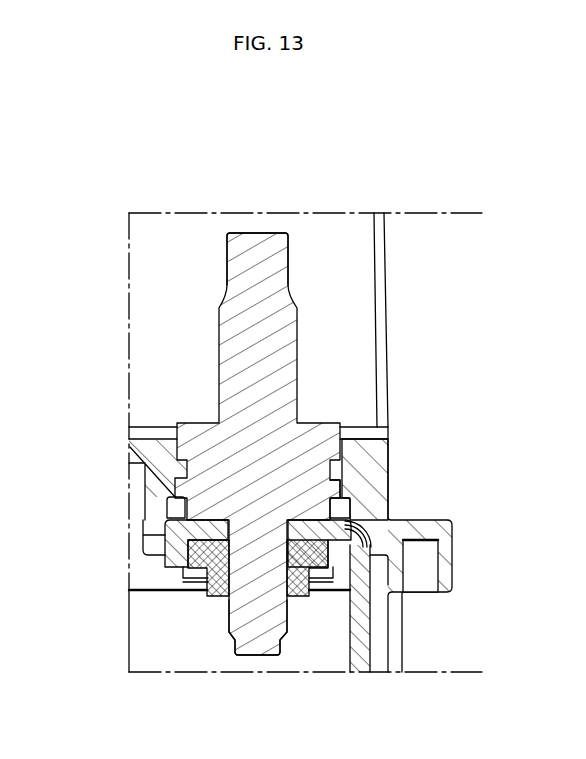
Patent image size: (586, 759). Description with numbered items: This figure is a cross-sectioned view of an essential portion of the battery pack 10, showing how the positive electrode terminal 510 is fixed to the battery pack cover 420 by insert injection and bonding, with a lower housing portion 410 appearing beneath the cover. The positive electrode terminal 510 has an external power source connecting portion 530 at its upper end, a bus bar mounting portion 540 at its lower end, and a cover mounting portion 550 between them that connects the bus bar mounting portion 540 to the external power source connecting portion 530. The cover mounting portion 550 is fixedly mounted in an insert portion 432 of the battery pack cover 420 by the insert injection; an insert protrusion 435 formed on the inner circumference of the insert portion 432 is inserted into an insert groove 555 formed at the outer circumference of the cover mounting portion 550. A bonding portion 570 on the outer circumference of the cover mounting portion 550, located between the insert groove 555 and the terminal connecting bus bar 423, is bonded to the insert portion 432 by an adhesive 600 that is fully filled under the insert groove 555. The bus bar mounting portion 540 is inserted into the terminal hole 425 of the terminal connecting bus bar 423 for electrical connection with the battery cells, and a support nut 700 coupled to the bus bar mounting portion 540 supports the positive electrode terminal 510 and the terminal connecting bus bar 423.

The battery pack 10 is at (97, 153).
The lower housing 410 is at (128, 648).
The battery pack cover 420 is at (128, 321).
The terminal connecting bus bar 423 is at (358, 660).
The terminal hole 425 is at (185, 578).
The insert portion 432 is at (150, 478).
The insert protrusion 435 is at (178, 428).
The positive electrode terminal 510 is at (309, 327).
The external power source connecting portion 530 is at (265, 238).
The bus bar mounting portion 540 is at (264, 657).
The cover mounting portion 550 is at (334, 430).
The insert groove 555 is at (333, 468).
The bonding portion 570 is at (336, 492).
The adhesive 600 is at (167, 509).
The support nut 700 is at (219, 598).